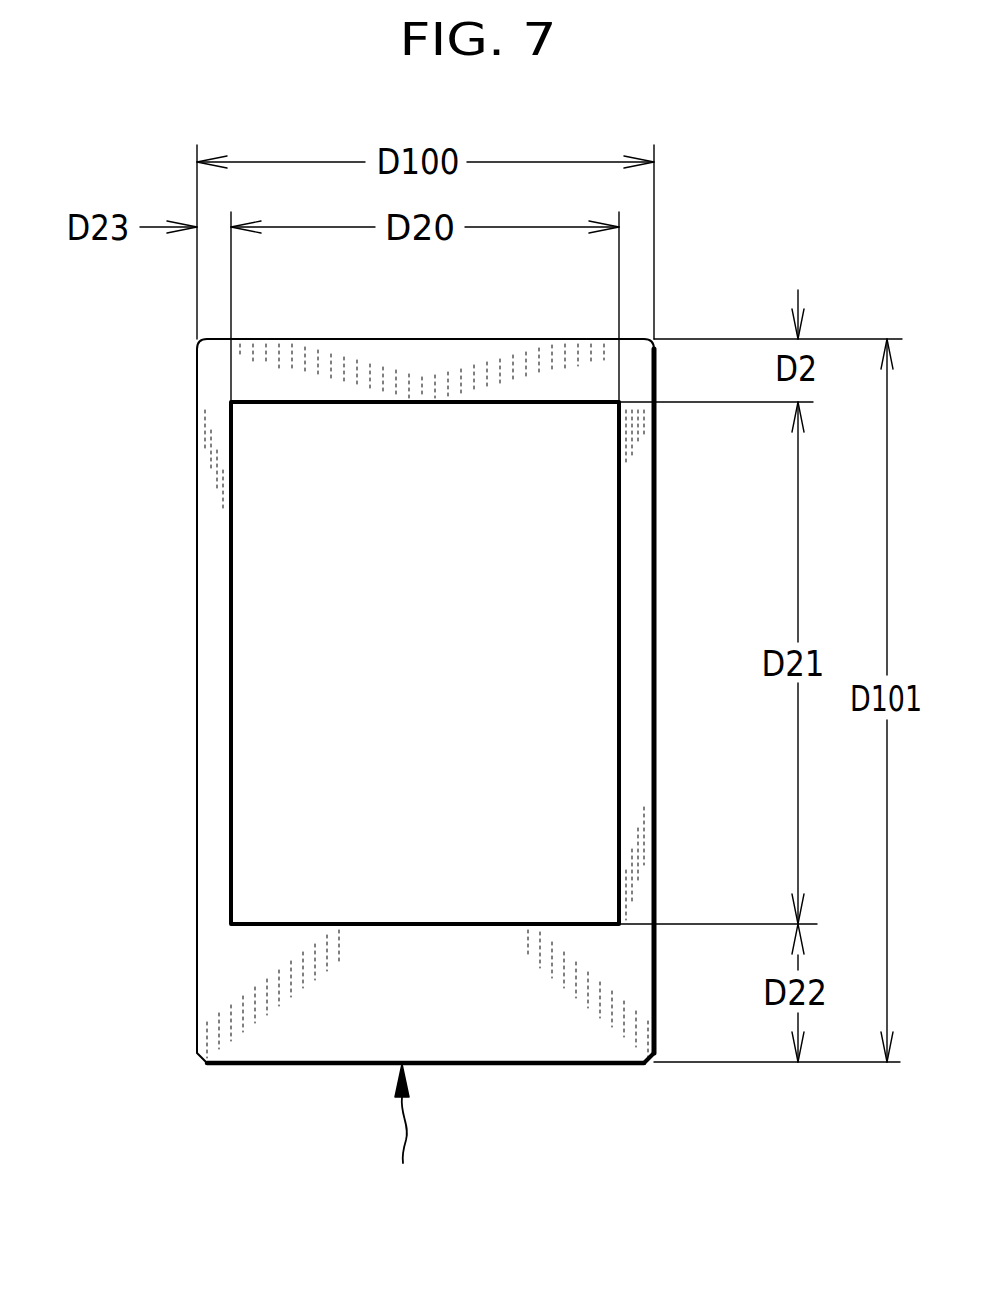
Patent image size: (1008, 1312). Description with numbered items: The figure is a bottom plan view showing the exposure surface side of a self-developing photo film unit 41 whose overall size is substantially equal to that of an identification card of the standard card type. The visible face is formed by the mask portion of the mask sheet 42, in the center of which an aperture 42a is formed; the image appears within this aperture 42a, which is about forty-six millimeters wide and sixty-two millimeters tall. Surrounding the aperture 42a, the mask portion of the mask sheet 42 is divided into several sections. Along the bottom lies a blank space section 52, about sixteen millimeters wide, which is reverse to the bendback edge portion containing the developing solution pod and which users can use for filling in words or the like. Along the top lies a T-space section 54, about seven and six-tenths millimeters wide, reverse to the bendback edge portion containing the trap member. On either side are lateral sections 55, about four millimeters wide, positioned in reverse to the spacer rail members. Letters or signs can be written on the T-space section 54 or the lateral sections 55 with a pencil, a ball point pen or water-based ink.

The photo film unit 41 is at (403, 1134).
The mask sheet 42 is at (197, 988).
The aperture 42a is at (232, 768).
The blank space section 52 is at (532, 1050).
The T-space section 54 is at (423, 358).
The lateral sections 55 is at (212, 624).